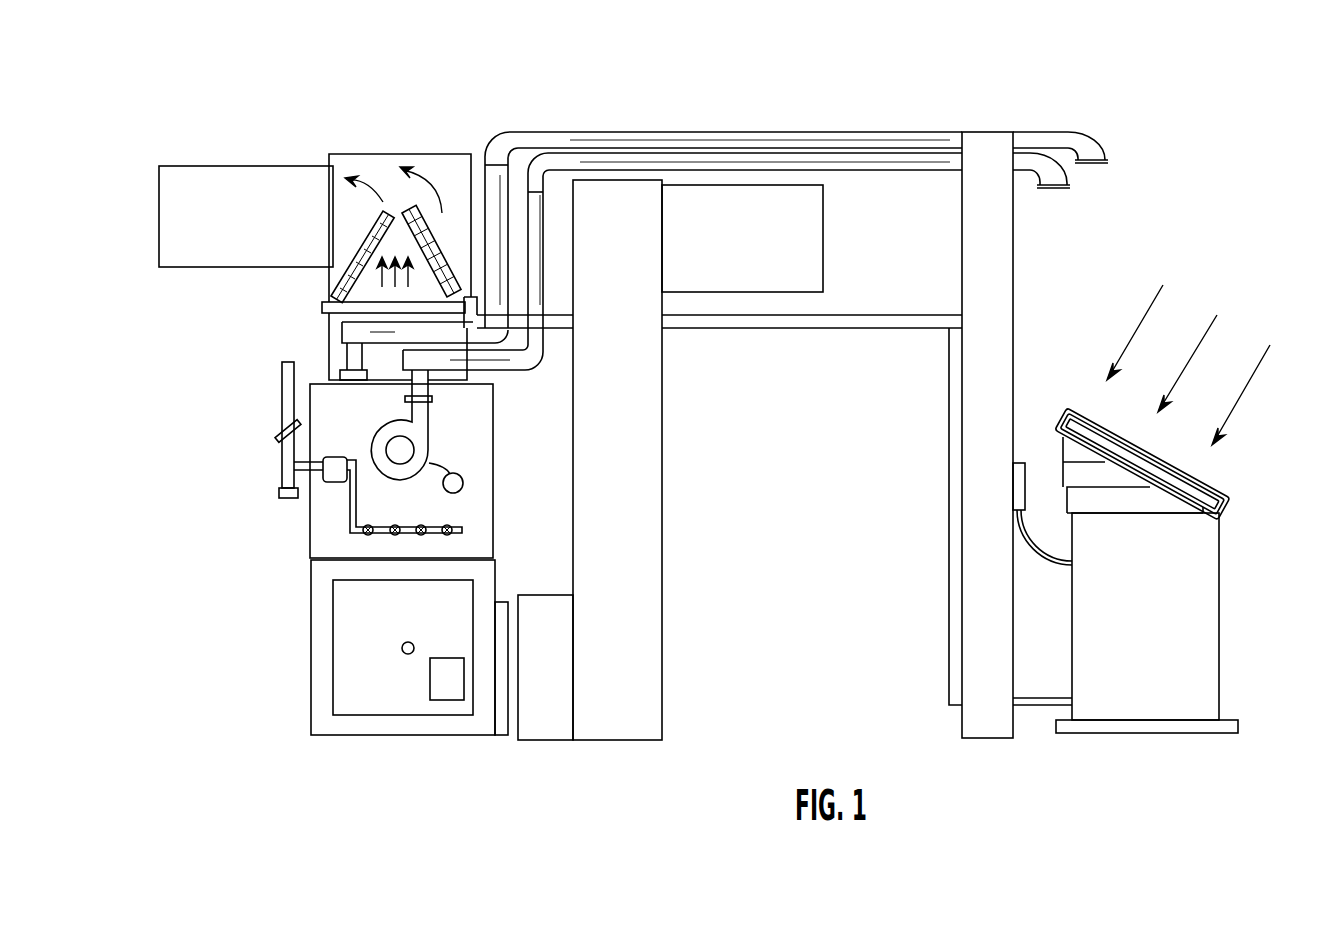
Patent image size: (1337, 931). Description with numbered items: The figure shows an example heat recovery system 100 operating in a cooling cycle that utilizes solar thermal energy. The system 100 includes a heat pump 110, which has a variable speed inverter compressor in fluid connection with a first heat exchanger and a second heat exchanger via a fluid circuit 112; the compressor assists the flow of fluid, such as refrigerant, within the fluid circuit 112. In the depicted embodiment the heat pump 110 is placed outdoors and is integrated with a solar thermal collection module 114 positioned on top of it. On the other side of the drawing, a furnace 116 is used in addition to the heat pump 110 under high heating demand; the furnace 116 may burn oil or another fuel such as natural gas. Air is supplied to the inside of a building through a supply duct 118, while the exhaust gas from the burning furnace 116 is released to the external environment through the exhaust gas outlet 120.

The system 100 is at (1180, 83).
The heat pump 110 is at (1163, 705).
The fluid circuit 112 is at (841, 328).
The solar thermal collection module 114 is at (1155, 464).
The furnace 116 is at (385, 737).
The supply duct 118 is at (230, 185).
The exhaust gas outlet 120 is at (1094, 165).